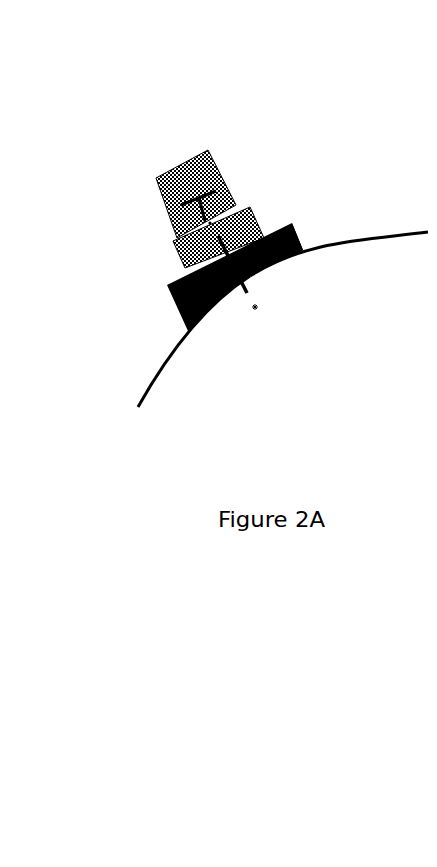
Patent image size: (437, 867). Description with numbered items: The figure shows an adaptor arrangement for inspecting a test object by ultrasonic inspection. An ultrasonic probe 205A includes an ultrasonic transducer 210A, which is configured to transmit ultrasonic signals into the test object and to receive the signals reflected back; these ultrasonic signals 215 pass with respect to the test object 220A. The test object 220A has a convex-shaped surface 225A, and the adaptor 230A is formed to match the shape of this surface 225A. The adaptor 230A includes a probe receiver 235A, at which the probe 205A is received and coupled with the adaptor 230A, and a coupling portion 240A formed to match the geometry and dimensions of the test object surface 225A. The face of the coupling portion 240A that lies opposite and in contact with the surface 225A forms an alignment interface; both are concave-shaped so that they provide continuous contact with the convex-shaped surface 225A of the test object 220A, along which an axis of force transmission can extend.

The ultrasonic probe 205A is at (150, 185).
The ultrasonic transducer 210A is at (236, 186).
The ultrasonic signals 215 is at (274, 325).
The test object 220A is at (339, 263).
The convex-shaped surface 225A is at (185, 352).
The adaptor 230A is at (142, 308).
The probe receiver 235A is at (178, 269).
The coupling portion 240A is at (312, 234).